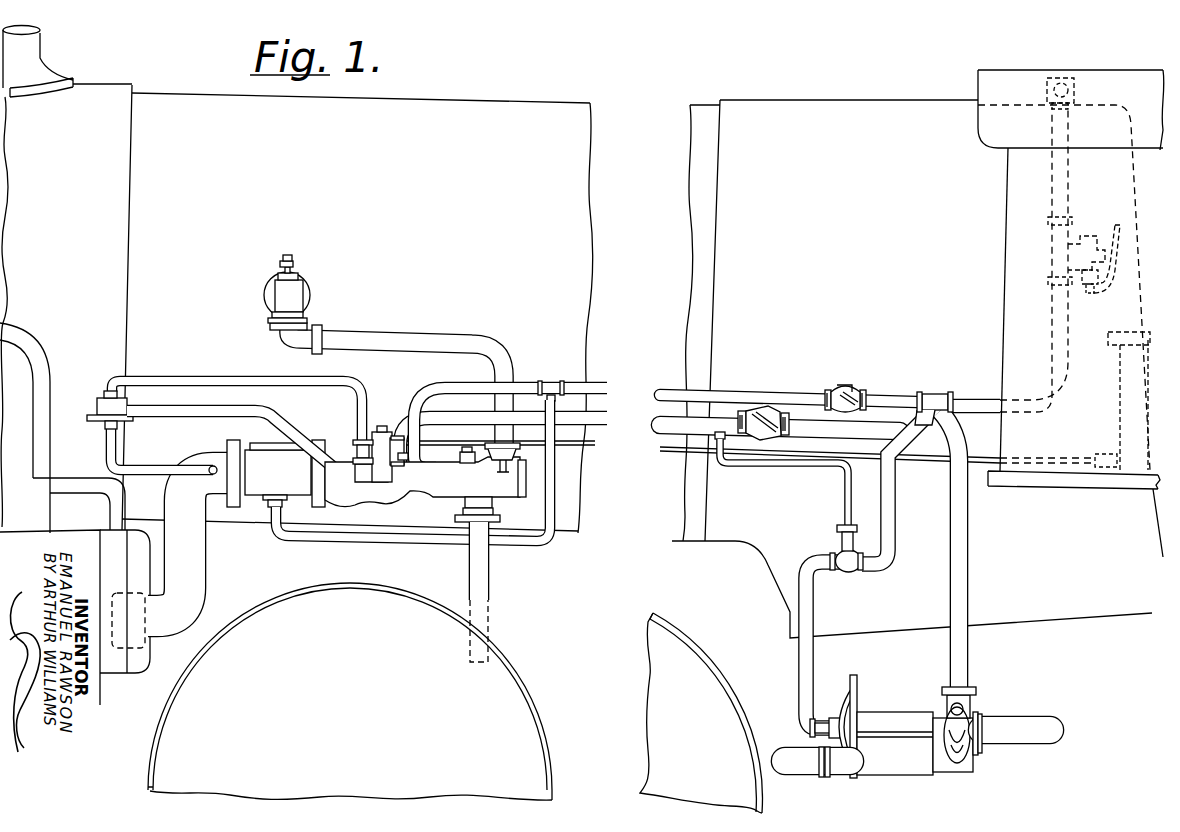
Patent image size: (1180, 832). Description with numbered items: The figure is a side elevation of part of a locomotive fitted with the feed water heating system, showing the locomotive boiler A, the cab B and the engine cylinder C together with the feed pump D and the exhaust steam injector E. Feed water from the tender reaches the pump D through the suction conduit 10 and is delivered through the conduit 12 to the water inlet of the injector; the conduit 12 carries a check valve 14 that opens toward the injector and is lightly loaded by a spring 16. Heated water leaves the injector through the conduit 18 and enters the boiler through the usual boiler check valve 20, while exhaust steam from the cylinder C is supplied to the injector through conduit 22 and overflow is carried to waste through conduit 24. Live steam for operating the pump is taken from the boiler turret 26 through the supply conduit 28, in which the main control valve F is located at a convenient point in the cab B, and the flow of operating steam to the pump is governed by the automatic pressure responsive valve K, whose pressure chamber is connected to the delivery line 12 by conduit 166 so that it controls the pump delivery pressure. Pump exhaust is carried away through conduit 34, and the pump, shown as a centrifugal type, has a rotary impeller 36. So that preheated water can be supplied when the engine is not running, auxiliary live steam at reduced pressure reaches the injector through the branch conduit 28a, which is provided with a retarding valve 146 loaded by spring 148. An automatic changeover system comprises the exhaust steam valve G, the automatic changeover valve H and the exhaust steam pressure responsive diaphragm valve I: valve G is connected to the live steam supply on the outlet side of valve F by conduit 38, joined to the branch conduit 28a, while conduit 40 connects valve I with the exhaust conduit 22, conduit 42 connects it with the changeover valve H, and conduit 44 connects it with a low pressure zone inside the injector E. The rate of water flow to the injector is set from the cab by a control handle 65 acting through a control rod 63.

The locomotive boiler A is at (505, 107).
The cab B is at (1015, 180).
The engine cylinder C is at (115, 545).
The feed pump D is at (897, 716).
The exhaust steam injector E is at (397, 497).
The main control valve F is at (1096, 236).
The exhaust steam valve G is at (266, 450).
The automatic changeover valve H is at (356, 440).
The exhaust steam pressure responsive diaphragm valve I is at (97, 404).
The automatic pressure responsive valve K is at (840, 540).
The suction conduit 10 is at (1028, 724).
The conduit 12 is at (958, 543).
The check valve 14 is at (750, 402).
The spring 16 is at (760, 410).
The conduit 18 is at (414, 340).
The boiler check valve 20 is at (298, 290).
The conduit 22 is at (200, 562).
The conduit 24 is at (490, 580).
The boiler turret 26 is at (1070, 80).
The supply conduit 28 is at (953, 400).
The branch live steam conduit 28a is at (517, 386).
The conduit 34 is at (796, 766).
The rotary impeller 36 is at (975, 764).
The conduit 38 is at (410, 546).
The conduit 40 is at (145, 472).
The conduit 42 is at (195, 382).
The conduit 44 is at (232, 414).
The control rod 63 is at (586, 449).
The control handle 65 is at (1138, 348).
The retarding valve 146 is at (864, 394).
The spring 148 is at (838, 386).
The conduit 166 is at (750, 467).